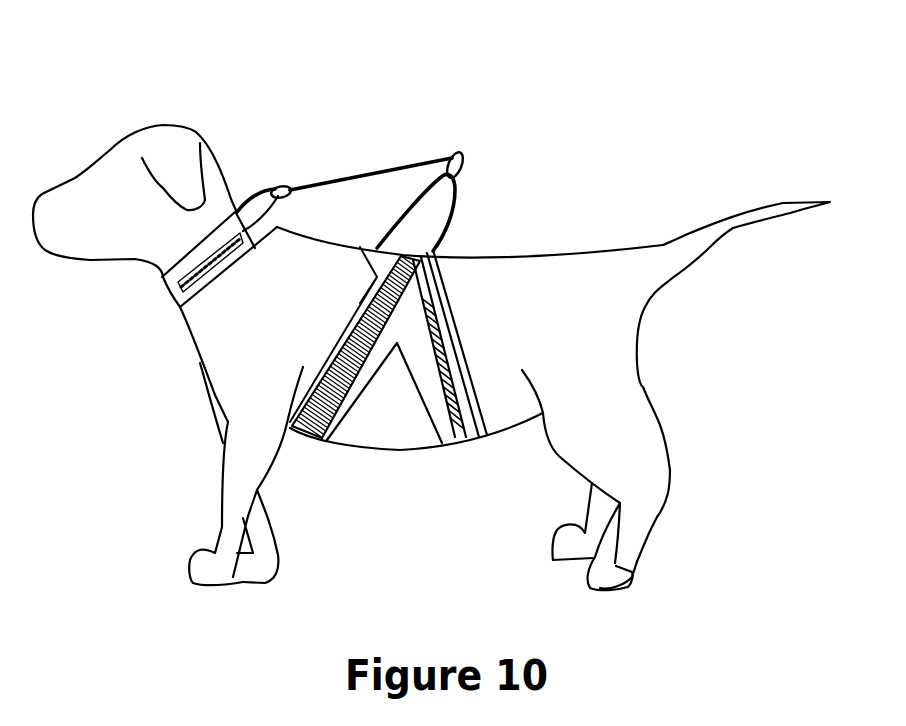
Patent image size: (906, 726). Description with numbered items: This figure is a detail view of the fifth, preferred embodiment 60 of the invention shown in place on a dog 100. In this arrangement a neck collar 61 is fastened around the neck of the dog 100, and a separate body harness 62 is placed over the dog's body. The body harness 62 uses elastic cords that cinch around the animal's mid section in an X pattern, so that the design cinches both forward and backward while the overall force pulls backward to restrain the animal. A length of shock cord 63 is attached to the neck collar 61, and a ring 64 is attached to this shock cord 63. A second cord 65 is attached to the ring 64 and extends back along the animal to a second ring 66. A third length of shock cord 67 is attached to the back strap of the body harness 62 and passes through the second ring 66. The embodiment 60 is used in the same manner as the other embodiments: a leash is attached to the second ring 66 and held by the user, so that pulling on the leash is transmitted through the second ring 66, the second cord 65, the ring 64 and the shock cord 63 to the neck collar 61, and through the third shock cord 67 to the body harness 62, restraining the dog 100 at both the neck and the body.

The dog 100 is at (108, 148).
The preferred embodiment 60 is at (150, 345).
The neck collar 61 is at (163, 294).
The body harness 62 is at (310, 437).
The shock cord 63 is at (259, 194).
The ring 64 is at (280, 185).
The second cord 65 is at (407, 163).
The second ring 66 is at (467, 167).
The third length of shock cord 67 is at (458, 215).